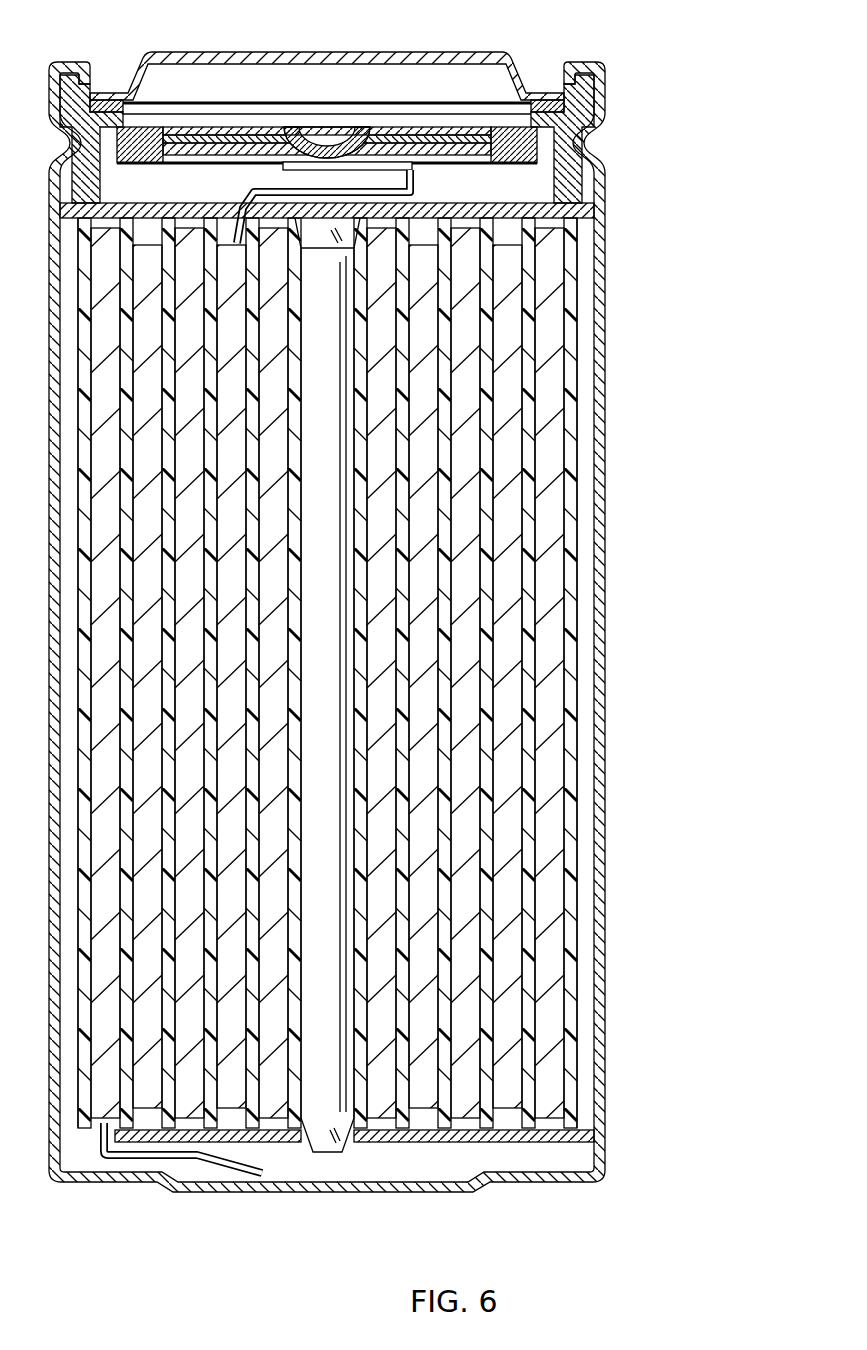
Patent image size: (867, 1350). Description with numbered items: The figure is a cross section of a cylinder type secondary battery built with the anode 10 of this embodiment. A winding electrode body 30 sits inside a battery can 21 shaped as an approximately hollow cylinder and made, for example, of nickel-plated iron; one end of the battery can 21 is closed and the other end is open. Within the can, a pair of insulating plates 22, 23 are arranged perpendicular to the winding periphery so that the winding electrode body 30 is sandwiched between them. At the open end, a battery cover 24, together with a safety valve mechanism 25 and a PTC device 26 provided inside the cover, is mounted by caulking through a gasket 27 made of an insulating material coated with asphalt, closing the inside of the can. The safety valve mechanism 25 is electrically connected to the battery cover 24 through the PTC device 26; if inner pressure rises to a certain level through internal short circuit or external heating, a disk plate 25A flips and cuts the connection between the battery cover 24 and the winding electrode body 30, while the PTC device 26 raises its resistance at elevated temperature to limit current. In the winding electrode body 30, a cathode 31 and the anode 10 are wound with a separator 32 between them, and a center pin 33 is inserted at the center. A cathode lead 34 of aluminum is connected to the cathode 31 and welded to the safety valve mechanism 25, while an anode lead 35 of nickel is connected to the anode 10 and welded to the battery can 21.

The anode 10 is at (555, 567).
The battery can 21 is at (607, 278).
The insulating plate 22 is at (590, 213).
The insulating plate 23 is at (590, 1133).
The battery cover 24 is at (289, 51).
The safety valve mechanism 25 is at (467, 113).
The disk plate 25A is at (417, 128).
The PTC device 26 is at (583, 108).
The gasket 27 is at (585, 172).
The winding electrode body 30 is at (580, 410).
The cathode 31 is at (510, 500).
The separator 32 is at (530, 637).
The center pin 33 is at (320, 690).
The cathode lead 34 is at (307, 163).
The anode lead 35 is at (210, 1163).